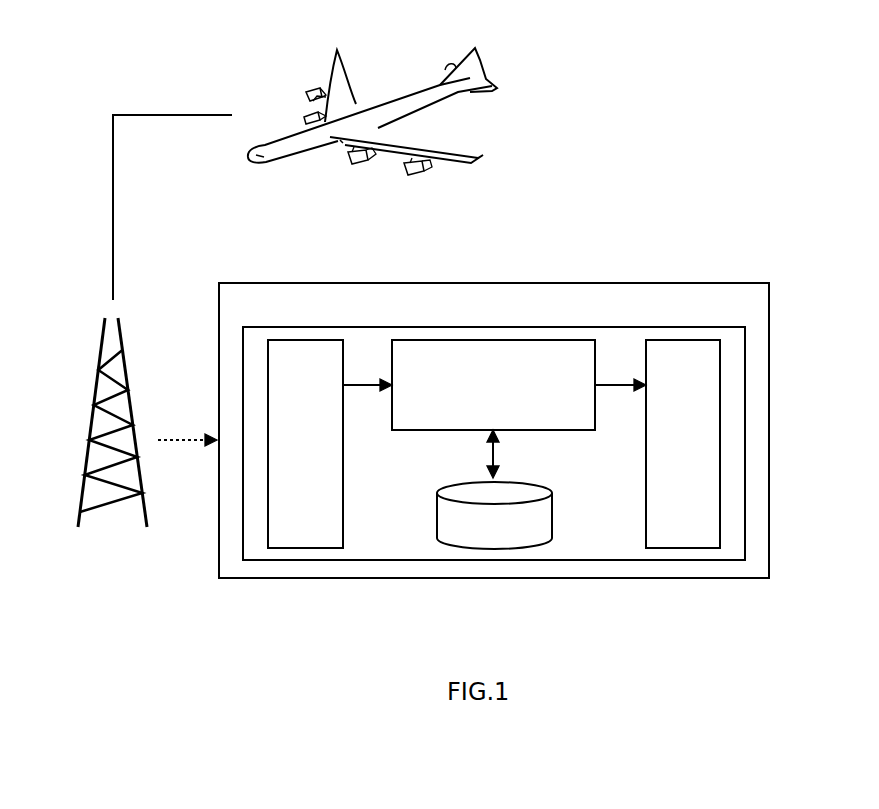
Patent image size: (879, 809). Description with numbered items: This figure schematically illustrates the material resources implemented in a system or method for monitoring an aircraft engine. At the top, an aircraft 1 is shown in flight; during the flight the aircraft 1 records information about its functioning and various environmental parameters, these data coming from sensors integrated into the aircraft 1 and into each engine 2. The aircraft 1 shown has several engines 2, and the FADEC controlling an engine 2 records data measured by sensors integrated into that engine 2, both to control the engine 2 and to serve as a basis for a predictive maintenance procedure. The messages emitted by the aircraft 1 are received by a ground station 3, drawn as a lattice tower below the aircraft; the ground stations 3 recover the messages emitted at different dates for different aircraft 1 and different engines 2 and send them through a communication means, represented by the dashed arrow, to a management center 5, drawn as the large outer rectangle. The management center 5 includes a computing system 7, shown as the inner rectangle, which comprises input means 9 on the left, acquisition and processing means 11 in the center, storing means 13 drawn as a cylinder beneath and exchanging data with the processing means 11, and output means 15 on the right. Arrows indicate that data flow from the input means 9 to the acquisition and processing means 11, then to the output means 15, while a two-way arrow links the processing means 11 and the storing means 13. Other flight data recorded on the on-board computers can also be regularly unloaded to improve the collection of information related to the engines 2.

The aircraft 1 is at (234, 160).
The engine 2 is at (313, 93).
The ground station 3 is at (80, 500).
The management center 5 is at (297, 588).
The computing system 7 is at (575, 327).
The input means 9 is at (343, 442).
The acquisition and processing means 11 is at (560, 432).
The storing means 13 is at (437, 508).
The output means 15 is at (646, 490).